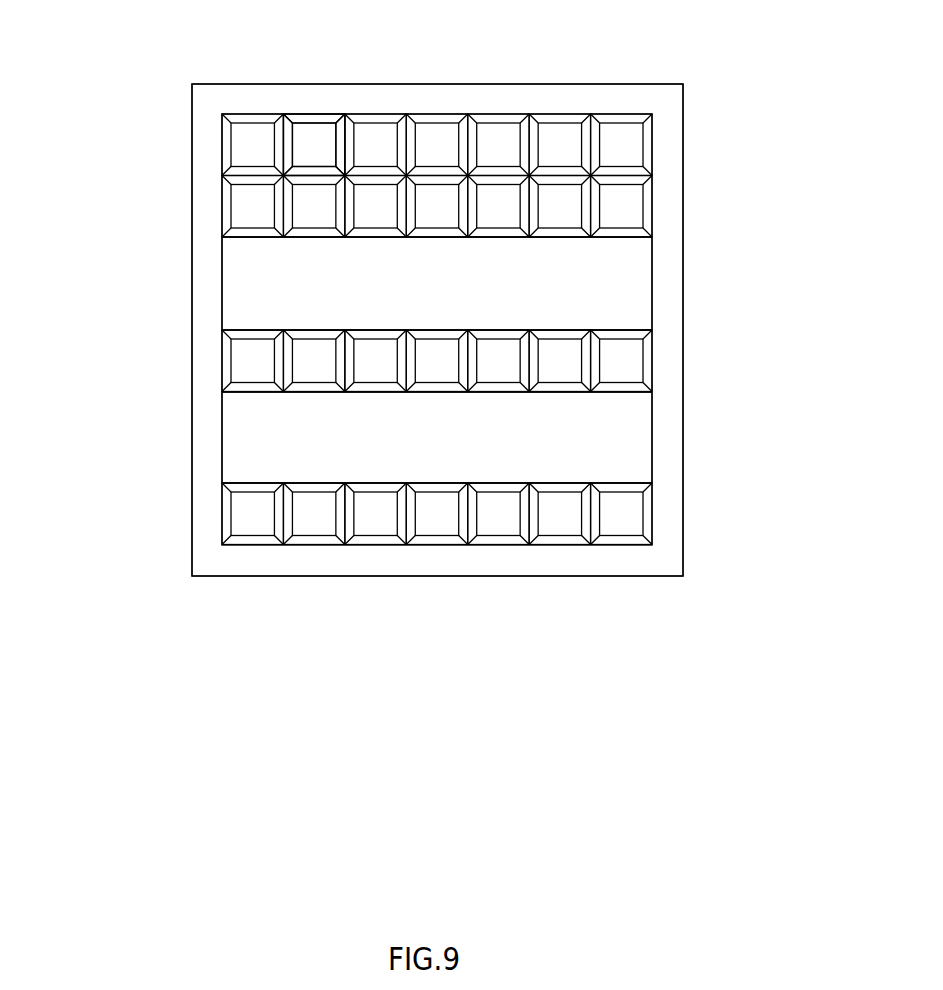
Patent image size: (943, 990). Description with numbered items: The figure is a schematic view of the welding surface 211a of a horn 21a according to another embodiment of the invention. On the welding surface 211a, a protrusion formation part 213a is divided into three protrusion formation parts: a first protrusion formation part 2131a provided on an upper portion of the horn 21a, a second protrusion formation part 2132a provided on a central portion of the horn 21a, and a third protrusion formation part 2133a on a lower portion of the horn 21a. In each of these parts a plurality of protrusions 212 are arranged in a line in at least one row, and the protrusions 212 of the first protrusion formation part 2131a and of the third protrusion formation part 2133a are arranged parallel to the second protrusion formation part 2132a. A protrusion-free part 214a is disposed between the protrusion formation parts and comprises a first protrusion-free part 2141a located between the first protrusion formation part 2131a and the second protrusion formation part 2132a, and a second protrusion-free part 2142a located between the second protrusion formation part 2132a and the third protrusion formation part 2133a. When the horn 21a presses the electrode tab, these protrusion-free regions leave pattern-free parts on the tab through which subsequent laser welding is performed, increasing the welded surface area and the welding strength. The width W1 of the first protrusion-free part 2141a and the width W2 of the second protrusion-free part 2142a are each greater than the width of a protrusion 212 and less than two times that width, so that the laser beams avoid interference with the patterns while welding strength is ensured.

The horn 21a is at (601, 52).
The welding surface 211a is at (436, 100).
The protrusion 212 is at (313, 118).
The protrusion formation part 213a is at (349, 294).
The first protrusion formation part 2131a is at (220, 115).
The second protrusion formation part 2132a is at (222, 361).
The third protrusion formation part 2133a is at (384, 514).
The protrusion-free part 214a is at (522, 360).
The first protrusion-free part 2141a is at (637, 283).
The second protrusion-free part 2142a is at (489, 437).
The width of the first protrusion-free part W1 is at (500, 238).
The width of the second protrusion-free part W2 is at (500, 393).